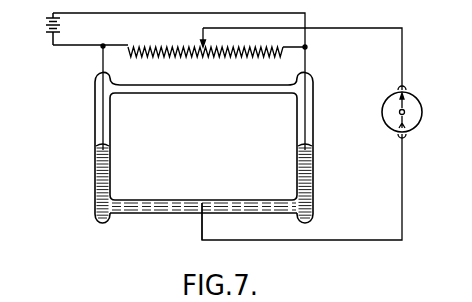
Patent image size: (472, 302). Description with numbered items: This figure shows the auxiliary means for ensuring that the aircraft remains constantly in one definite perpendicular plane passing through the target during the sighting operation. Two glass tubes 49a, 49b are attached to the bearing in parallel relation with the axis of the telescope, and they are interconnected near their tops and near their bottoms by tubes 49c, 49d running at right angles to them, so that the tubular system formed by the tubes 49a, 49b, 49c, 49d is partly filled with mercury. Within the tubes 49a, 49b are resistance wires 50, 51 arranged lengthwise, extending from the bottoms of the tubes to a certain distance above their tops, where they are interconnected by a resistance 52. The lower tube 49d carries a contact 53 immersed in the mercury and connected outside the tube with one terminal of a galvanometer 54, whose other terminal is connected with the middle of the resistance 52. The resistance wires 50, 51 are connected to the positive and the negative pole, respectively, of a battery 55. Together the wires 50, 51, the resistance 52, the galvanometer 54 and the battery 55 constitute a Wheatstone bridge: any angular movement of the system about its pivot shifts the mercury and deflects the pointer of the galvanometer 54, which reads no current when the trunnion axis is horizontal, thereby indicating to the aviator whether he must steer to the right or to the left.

The glass tube 49a is at (97, 127).
The glass tube 49b is at (311, 97).
The tube 49c is at (205, 86).
The tube 49d is at (233, 207).
The resistance wire 50 is at (102, 56).
The resistance wire 51 is at (306, 57).
The resistance 52 is at (177, 54).
The contact 53 is at (193, 216).
The galvanometer 54 is at (383, 112).
The battery 55 is at (62, 25).